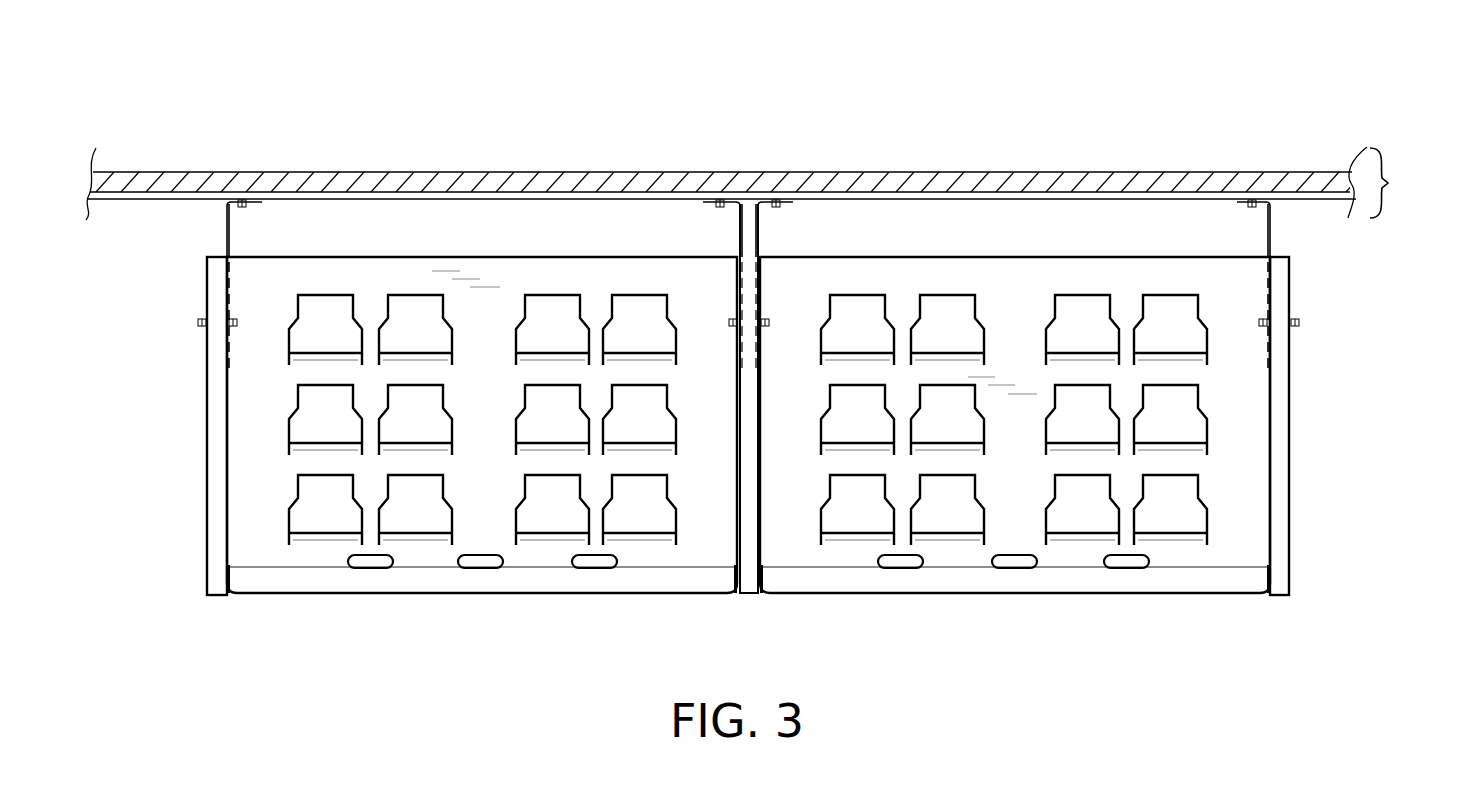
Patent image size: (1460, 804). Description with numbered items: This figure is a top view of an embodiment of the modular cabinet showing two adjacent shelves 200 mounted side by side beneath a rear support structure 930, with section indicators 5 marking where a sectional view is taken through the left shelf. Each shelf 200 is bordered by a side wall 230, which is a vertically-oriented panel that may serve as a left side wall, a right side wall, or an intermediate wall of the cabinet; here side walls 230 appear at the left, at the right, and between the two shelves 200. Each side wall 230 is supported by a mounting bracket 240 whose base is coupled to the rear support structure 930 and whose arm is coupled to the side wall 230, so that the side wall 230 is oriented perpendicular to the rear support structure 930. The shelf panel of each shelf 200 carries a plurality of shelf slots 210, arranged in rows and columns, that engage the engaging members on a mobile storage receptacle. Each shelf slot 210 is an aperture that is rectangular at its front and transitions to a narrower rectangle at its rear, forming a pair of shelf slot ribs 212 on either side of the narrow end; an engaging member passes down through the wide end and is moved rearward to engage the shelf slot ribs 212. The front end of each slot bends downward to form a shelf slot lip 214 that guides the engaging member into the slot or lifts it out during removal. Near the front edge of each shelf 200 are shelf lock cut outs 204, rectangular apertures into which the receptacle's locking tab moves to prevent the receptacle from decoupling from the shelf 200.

The rear support structure 930 is at (771, 183).
The mounting bracket 240 is at (227, 233).
The side wall 230 is at (212, 502).
The shelf 200 is at (748, 399).
The shelf lock cut outs 204 is at (922, 568).
The shelf slots 210 is at (840, 313).
The shelf slot ribs 212 is at (973, 318).
The shelf slot lip 214 is at (1173, 442).
The section line for FIG. 5 is at (323, 282).